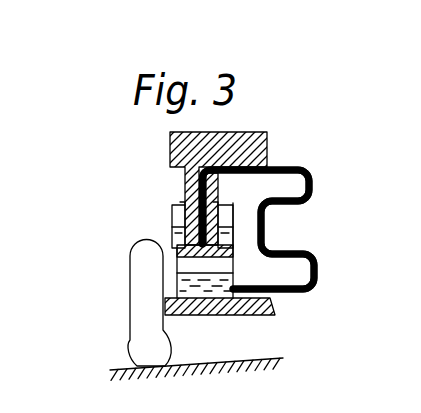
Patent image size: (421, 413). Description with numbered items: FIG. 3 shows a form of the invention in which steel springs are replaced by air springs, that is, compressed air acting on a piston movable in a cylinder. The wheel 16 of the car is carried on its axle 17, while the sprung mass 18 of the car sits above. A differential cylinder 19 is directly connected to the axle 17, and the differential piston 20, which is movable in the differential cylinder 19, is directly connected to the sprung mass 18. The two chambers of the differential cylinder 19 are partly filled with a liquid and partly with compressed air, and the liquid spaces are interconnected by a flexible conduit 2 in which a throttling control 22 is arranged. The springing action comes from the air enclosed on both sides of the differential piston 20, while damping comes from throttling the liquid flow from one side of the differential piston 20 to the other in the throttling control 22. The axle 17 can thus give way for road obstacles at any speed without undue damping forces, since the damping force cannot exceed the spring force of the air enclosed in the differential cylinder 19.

The tube 2 is at (313, 178).
The wheel 16 is at (130, 308).
The axle 17 is at (272, 305).
The sprung mass 18 is at (267, 143).
The differential cylinder 19 is at (172, 217).
The differential piston 20 is at (182, 252).
The throttling control 22 is at (258, 228).